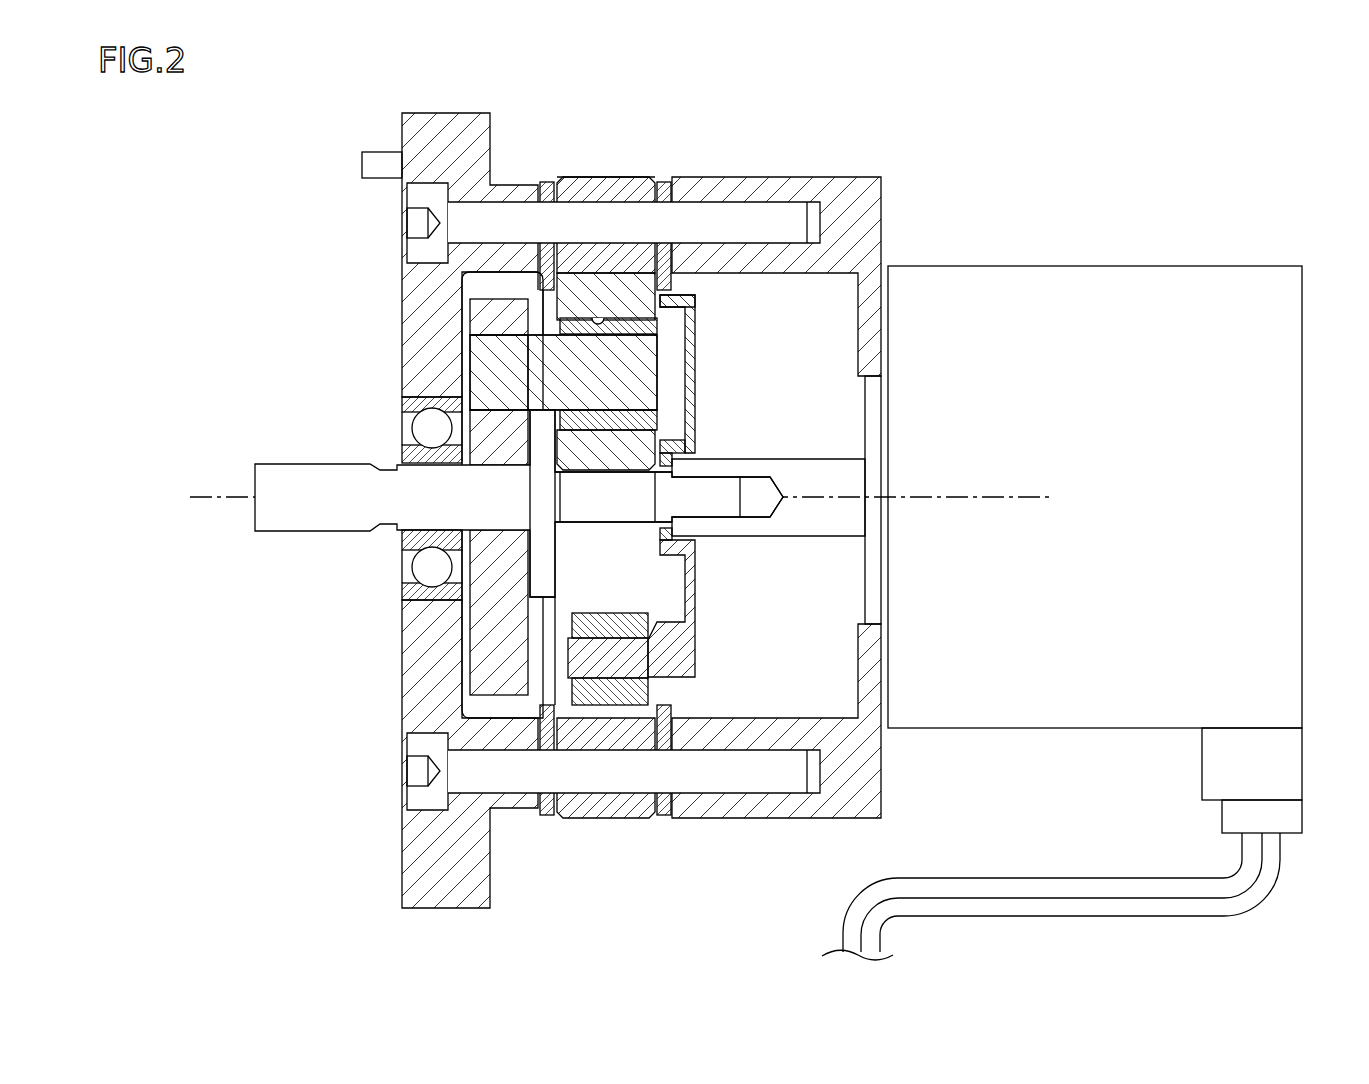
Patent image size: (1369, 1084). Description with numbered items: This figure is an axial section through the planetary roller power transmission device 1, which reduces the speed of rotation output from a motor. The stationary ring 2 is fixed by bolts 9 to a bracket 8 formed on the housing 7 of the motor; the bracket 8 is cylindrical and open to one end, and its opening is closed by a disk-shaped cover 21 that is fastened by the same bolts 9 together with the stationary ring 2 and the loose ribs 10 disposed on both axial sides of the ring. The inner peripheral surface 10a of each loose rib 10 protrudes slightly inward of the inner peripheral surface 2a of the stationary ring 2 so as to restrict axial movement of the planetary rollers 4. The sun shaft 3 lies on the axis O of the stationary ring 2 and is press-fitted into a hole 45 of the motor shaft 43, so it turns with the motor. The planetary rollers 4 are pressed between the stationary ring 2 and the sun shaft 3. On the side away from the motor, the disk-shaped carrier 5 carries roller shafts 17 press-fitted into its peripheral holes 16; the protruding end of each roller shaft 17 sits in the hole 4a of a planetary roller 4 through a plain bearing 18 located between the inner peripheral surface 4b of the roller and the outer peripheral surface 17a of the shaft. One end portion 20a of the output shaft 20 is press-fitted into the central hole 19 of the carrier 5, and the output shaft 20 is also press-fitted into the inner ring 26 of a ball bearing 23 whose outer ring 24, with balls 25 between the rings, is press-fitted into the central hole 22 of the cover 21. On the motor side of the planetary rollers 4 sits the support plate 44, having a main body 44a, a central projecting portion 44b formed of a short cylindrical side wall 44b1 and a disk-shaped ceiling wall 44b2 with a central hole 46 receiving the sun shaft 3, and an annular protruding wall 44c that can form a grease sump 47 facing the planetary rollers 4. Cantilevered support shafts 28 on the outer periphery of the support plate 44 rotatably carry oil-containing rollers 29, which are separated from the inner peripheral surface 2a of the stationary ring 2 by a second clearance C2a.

The planetary roller power transmission device 1 is at (566, 168).
The stationary ring 2 is at (569, 177).
The inner peripheral surface of the stationary ring 2a is at (545, 283).
The sun shaft 3 is at (648, 510).
The planetary roller 4 is at (622, 285).
The hole of the planetary roller 4a is at (556, 425).
The inner peripheral surface of the planetary roller 4b is at (598, 318).
The carrier 5 is at (485, 667).
The housing 7 is at (935, 305).
The bracket 8 is at (757, 186).
The bolt 9 is at (693, 215).
The loose rib 10 is at (542, 186).
The inner peripheral surface of the loose rib 10a is at (548, 308).
The peripheral hole 16 is at (490, 390).
The roller shaft 17 is at (487, 352).
The outer peripheral surface of the roller shaft 17a is at (585, 505).
The plain bearing 18 is at (628, 505).
The central hole of the carrier 19 is at (480, 605).
The output shaft 20 is at (282, 472).
The end portion of the output shaft 20a is at (522, 505).
The cover 21 is at (440, 128).
The central hole of the cover 22 is at (405, 418).
The ball bearing 23 is at (364, 588).
The outer ring 24 is at (403, 593).
The ball 25 is at (403, 568).
The inner ring 26 is at (403, 540).
The support shaft 28 is at (627, 660).
The oil-containing roller 29 is at (608, 695).
The motor shaft 43 is at (830, 490).
The support plate 44 is at (754, 298).
The main body 44a is at (697, 360).
The projecting portion 44b is at (754, 420).
The side wall 44b1 is at (670, 445).
The ceiling wall 44b2 is at (673, 462).
The protruding wall 44c is at (681, 297).
The hole 45 is at (722, 515).
The central hole of the support plate 46 is at (703, 515).
The grease sump 47 is at (670, 380).
The second clearance C2a is at (585, 655).
The axis O is at (220, 497).